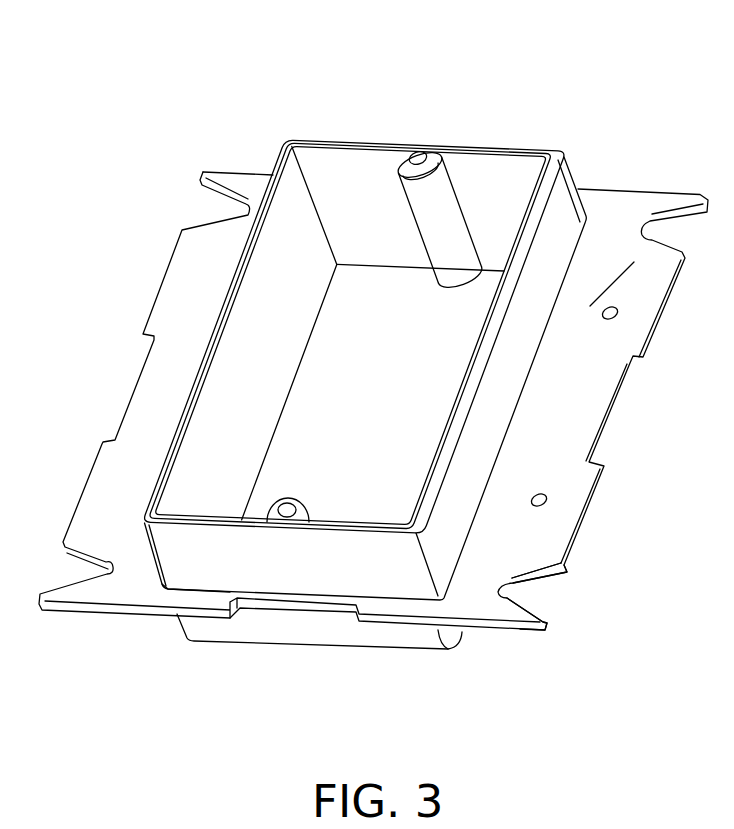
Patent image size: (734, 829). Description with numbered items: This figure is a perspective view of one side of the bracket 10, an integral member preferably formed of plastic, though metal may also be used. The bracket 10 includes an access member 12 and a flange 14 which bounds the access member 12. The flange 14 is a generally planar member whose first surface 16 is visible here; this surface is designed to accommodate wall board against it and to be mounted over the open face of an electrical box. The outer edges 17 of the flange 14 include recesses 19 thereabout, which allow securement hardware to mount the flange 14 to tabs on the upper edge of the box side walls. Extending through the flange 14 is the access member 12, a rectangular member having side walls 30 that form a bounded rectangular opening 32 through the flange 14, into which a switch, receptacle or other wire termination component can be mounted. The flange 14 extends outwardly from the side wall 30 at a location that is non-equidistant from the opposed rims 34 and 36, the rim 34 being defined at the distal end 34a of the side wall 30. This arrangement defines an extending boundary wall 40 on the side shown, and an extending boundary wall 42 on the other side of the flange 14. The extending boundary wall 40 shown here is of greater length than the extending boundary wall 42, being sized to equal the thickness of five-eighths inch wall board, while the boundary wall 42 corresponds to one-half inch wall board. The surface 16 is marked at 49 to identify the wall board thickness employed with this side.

The bracket 10 is at (415, 116).
The access member 12 is at (347, 522).
The flange 14 is at (560, 540).
The first surface 16 is at (585, 430).
The outer edges 17 is at (517, 635).
The recesses 19 is at (557, 578).
The side walls 30 is at (258, 400).
The rectangular opening 32 is at (402, 372).
The rim 34 is at (282, 145).
The distal end 34a is at (513, 150).
The rim 36 is at (447, 648).
The extending boundary wall 40 is at (175, 578).
The extending boundary wall 42 is at (310, 636).
The marking 49 is at (613, 262).